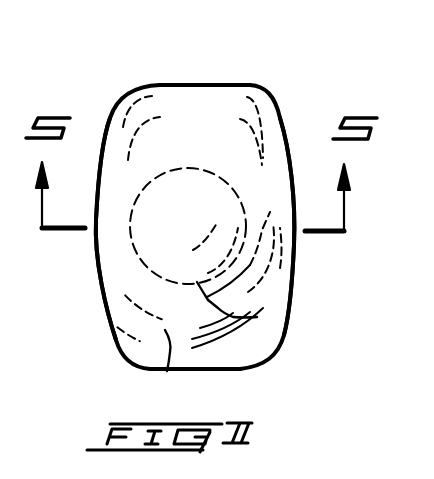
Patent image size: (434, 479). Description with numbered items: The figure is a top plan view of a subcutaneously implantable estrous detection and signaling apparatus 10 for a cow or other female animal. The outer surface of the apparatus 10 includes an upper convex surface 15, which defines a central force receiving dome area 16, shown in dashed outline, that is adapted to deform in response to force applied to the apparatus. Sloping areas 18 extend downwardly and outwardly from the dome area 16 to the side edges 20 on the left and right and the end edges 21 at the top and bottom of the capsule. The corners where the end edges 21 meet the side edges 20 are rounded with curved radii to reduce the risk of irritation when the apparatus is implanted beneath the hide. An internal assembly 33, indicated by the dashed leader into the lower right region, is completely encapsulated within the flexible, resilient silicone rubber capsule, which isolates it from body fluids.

The estrous detection and signaling apparatus 10 is at (146, 56).
The upper convex surface 15 is at (207, 97).
The force receiving dome area 16 is at (145, 225).
The sloping areas 18 is at (163, 373).
The side edges 20 is at (96, 118).
The end edges 21 is at (179, 74).
The internal assembly 33 is at (262, 318).